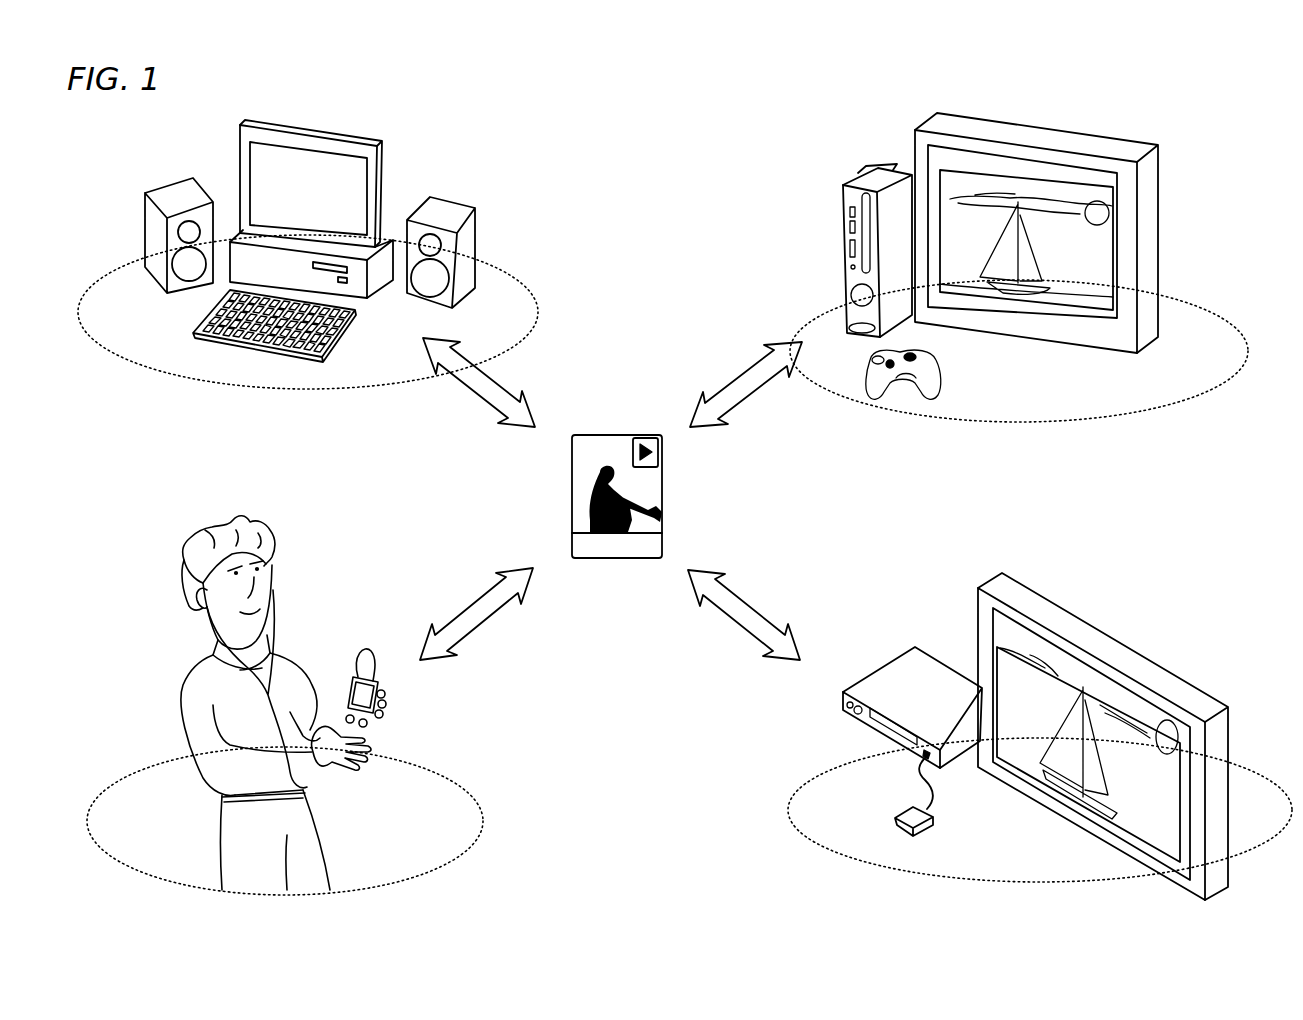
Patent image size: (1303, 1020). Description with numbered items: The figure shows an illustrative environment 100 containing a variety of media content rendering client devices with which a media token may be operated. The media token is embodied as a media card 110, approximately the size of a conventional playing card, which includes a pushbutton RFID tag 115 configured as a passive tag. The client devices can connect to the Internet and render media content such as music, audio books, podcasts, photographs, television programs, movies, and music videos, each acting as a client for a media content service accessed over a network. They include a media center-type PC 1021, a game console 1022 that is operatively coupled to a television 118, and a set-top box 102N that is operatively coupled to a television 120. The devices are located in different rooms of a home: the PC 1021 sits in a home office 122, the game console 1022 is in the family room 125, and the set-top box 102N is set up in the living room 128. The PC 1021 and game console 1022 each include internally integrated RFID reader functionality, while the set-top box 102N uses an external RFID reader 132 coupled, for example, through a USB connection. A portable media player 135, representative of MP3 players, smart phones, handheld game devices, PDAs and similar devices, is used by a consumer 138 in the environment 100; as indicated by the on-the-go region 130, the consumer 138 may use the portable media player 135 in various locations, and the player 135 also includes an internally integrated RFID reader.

The illustrative environment 100 is at (621, 178).
The media center-type PC 1021 is at (351, 140).
The game console 1022 is at (878, 164).
The set-top box 102N is at (918, 647).
The media card 110 is at (587, 433).
The pushbutton RFID tag 115 is at (658, 455).
The television 118 is at (1055, 130).
The television 120 is at (1043, 596).
The home office 122 is at (536, 314).
The family room 125 is at (1197, 394).
The living room 128 is at (798, 825).
The on the go 130 is at (484, 820).
The external RFID reader 132 is at (920, 830).
The portable media player 135 is at (366, 697).
The consumer 138 is at (328, 562).